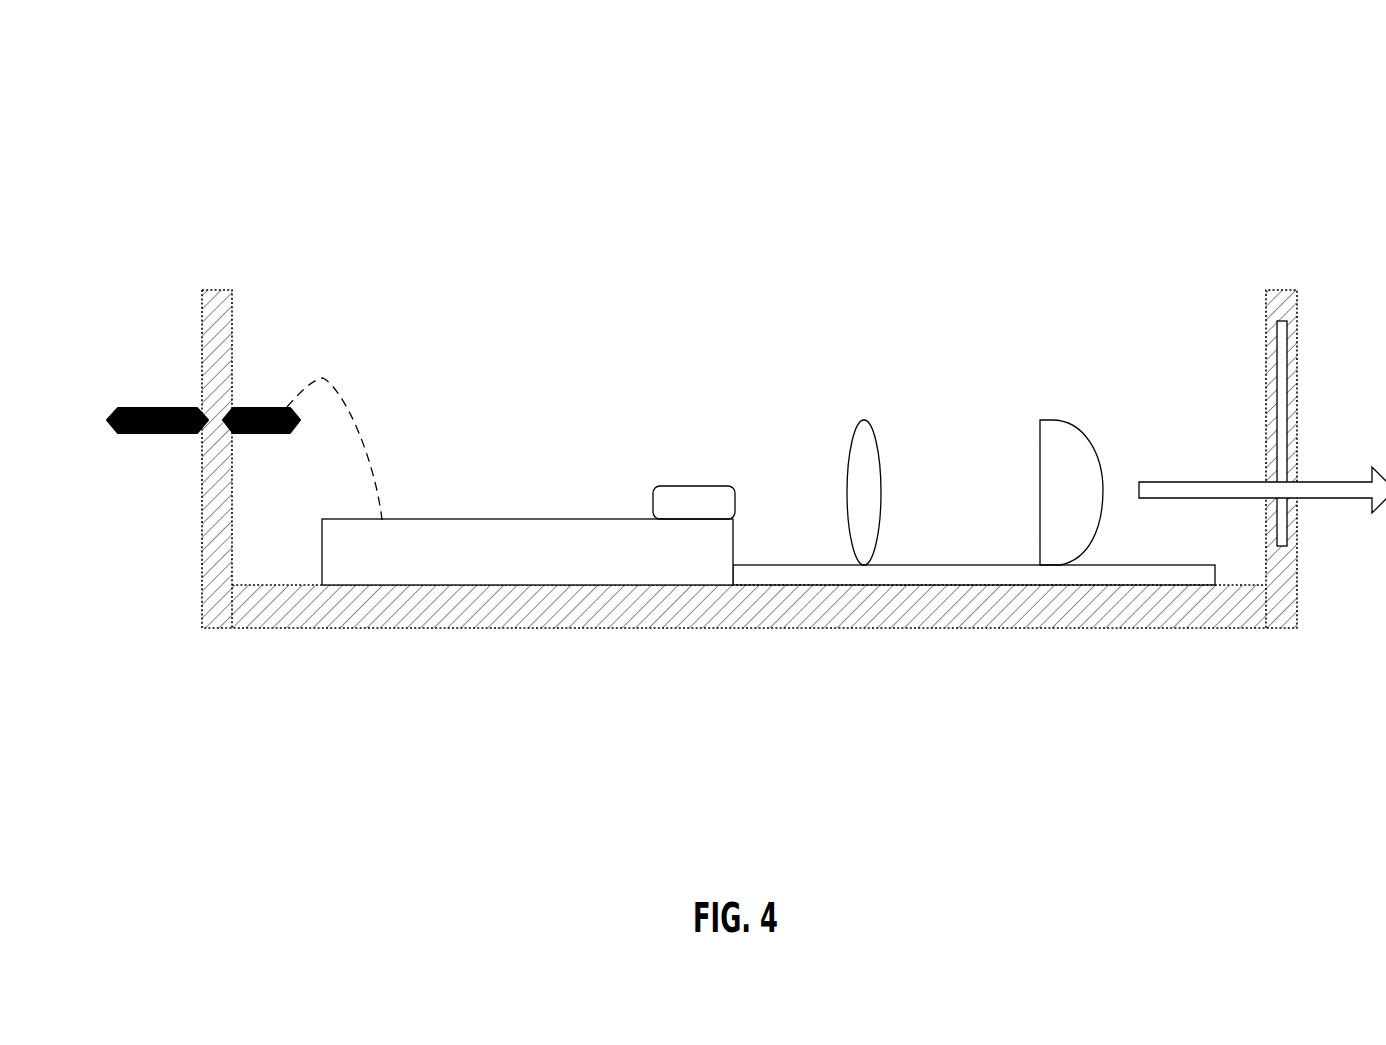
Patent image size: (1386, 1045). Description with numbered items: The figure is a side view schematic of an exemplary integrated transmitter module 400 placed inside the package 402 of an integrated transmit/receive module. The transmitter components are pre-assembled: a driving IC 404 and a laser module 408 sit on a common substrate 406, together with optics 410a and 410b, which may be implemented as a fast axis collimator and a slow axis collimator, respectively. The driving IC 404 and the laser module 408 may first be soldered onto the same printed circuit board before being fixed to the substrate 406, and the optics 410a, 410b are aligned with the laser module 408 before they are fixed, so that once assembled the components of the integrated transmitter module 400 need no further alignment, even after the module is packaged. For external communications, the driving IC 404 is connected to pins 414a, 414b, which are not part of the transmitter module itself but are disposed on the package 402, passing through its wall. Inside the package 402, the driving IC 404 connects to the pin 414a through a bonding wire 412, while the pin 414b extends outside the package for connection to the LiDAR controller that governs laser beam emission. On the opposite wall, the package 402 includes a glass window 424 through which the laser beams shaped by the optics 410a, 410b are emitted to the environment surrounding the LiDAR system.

The integrated transmitter module 400 is at (740, 64).
The package 402 is at (287, 585).
The driving IC 404 is at (529, 518).
The substrate 406 is at (995, 563).
The laser module 408 is at (697, 487).
The optics 410a is at (855, 437).
The optics 410b is at (1070, 435).
The bonding wire 412 is at (328, 378).
The pin 414a is at (268, 408).
The pin 414b is at (163, 408).
The glass window 424 is at (1282, 448).